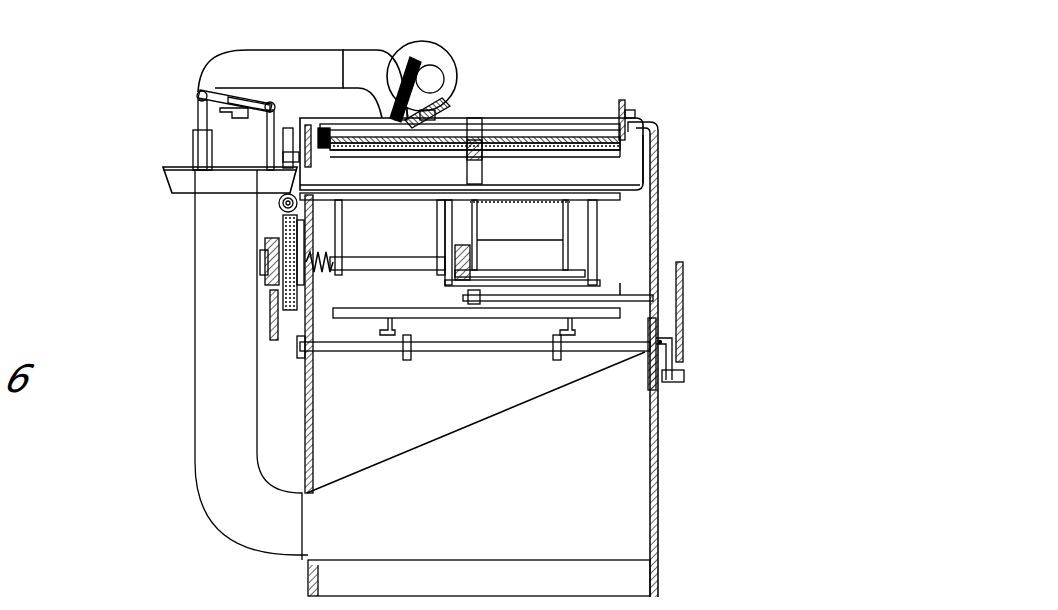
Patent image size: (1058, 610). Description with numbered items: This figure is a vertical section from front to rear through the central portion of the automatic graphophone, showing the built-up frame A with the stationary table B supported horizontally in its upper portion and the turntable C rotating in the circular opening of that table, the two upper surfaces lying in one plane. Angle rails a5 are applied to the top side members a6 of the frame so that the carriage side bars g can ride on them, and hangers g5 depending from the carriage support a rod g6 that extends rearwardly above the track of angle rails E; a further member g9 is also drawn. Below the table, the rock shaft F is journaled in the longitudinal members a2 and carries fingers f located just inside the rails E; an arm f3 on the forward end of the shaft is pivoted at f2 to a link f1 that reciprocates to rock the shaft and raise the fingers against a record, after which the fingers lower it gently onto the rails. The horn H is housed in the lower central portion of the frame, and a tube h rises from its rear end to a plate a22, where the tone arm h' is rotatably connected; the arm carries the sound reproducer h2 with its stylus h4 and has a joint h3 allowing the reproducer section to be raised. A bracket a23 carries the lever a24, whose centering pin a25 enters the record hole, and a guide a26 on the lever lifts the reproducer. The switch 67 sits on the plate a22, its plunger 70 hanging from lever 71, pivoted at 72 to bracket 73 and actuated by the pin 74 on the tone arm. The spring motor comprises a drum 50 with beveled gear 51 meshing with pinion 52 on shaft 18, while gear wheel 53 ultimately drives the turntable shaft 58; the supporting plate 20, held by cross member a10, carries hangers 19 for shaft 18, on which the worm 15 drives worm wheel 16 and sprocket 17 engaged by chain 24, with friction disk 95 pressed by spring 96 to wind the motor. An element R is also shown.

The frame A is at (656, 212).
The horn H is at (415, 344).
The tube h is at (251, 376).
The tone arm h' is at (270, 51).
The sound reproducer h2 is at (440, 55).
The joint h3 is at (370, 60).
The needle or stylus h4 is at (470, 118).
The plate a22 is at (240, 175).
The bracket a23 is at (283, 150).
The lever a24 is at (360, 124).
The centering pin a25 is at (435, 125).
The guide a26 is at (407, 110).
The angle rails a5 is at (312, 130).
The top side members a6 is at (315, 155).
The cross member a10 is at (535, 170).
The longitudinal members a2 is at (656, 322).
The screen R is at (565, 132).
The turntable C is at (537, 135).
The stationary table B is at (658, 133).
The side bars g is at (622, 100).
The hangers g5 is at (658, 180).
The rod g6 is at (620, 283).
The rod g9 is at (468, 298).
The angle rails E is at (380, 332).
The rock shaft F is at (484, 342).
The fingers f is at (408, 360).
The link f1 is at (683, 296).
The pivot f2 is at (684, 376).
The arm f3 is at (672, 352).
The plunger 70 is at (198, 113).
The lever 71 is at (230, 92).
The pivot 72 is at (262, 100).
The bracket 73 is at (273, 115).
The pin 74 is at (236, 118).
The switch 67 is at (193, 153).
The shaft 58 is at (467, 180).
The supporting plate 20 is at (398, 192).
The hangers 19 is at (342, 215).
The shaft 18 is at (372, 258).
The spring 96 is at (328, 272).
The friction disk 95 is at (300, 240).
The worm 15 is at (280, 210).
The worm wheel 16 is at (283, 296).
The sprocket 17 is at (265, 262).
The chain 24 is at (270, 330).
The spring enclosing drum 50 is at (522, 243).
The beveled gear 51 is at (512, 272).
The beveled pinion 52 is at (460, 245).
The gear wheel 53 is at (540, 205).